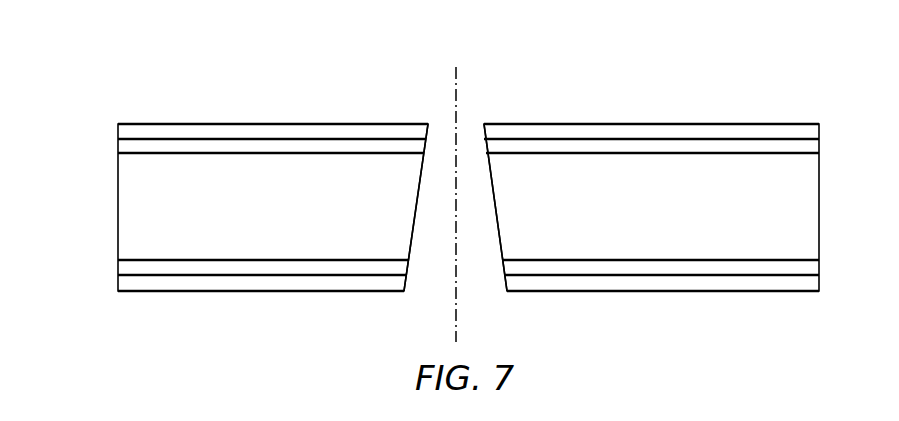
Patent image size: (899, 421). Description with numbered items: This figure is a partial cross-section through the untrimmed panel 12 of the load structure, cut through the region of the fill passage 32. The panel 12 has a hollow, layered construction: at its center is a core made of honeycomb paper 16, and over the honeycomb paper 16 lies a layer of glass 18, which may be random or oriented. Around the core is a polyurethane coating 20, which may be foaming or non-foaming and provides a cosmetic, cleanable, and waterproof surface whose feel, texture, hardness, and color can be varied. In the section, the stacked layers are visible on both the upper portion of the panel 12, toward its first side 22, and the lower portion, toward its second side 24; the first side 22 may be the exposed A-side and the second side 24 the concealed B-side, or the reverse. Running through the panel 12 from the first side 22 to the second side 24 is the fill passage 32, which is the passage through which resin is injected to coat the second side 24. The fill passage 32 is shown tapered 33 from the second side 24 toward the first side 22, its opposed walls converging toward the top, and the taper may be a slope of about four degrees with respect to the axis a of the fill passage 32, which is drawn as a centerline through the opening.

The panel 12 is at (198, 72).
The honeycomb paper 16 is at (170, 198).
The layer of glass 18 is at (122, 155).
The polyurethane coating 20 is at (167, 130).
The first side 22 is at (626, 102).
The second side 24 is at (680, 316).
The fill passage 32 is at (442, 116).
The tapered 33 is at (413, 220).
The axis a is at (457, 90).